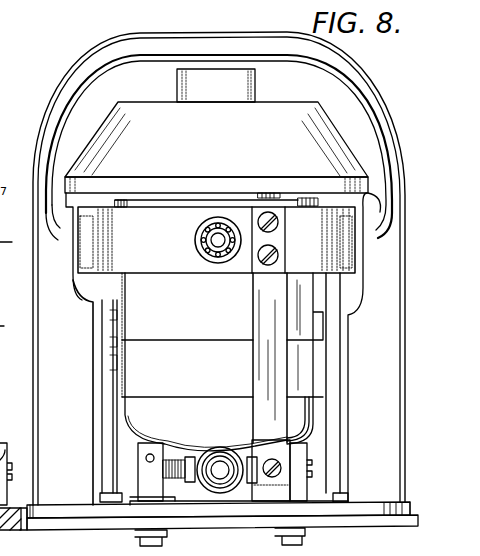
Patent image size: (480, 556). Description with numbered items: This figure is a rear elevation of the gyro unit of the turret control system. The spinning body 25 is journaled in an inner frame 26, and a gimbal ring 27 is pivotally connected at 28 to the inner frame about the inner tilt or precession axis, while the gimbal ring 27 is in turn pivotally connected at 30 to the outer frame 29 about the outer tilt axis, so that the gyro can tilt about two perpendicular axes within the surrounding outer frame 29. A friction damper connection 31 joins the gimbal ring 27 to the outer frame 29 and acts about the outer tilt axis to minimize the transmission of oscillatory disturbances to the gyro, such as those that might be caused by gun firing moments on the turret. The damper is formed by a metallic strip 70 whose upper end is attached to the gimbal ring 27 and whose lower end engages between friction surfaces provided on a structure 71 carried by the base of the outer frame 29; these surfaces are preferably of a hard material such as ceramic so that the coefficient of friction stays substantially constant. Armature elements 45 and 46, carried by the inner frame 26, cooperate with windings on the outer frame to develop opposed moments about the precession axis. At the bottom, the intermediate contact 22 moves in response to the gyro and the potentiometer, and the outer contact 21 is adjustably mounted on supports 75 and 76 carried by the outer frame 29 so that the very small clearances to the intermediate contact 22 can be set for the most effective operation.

The outer contact 21 is at (198, 452).
The intermediate contact 22 is at (227, 452).
The spinning body 25 is at (155, 113).
The inner frame 26 is at (140, 376).
The gimbal ring 27 is at (145, 223).
The pivotal connection 28 is at (212, 244).
The outer frame 29 is at (47, 357).
The pivotal connection 30 is at (82, 258).
The friction damper connection 31 is at (240, 377).
The armature element 45 is at (332, 470).
The armature element 46 is at (101, 454).
The metallic strip 70 is at (258, 327).
The friction structure 71 is at (283, 452).
The contact support 75 is at (300, 492).
The contact support 76 is at (145, 490).